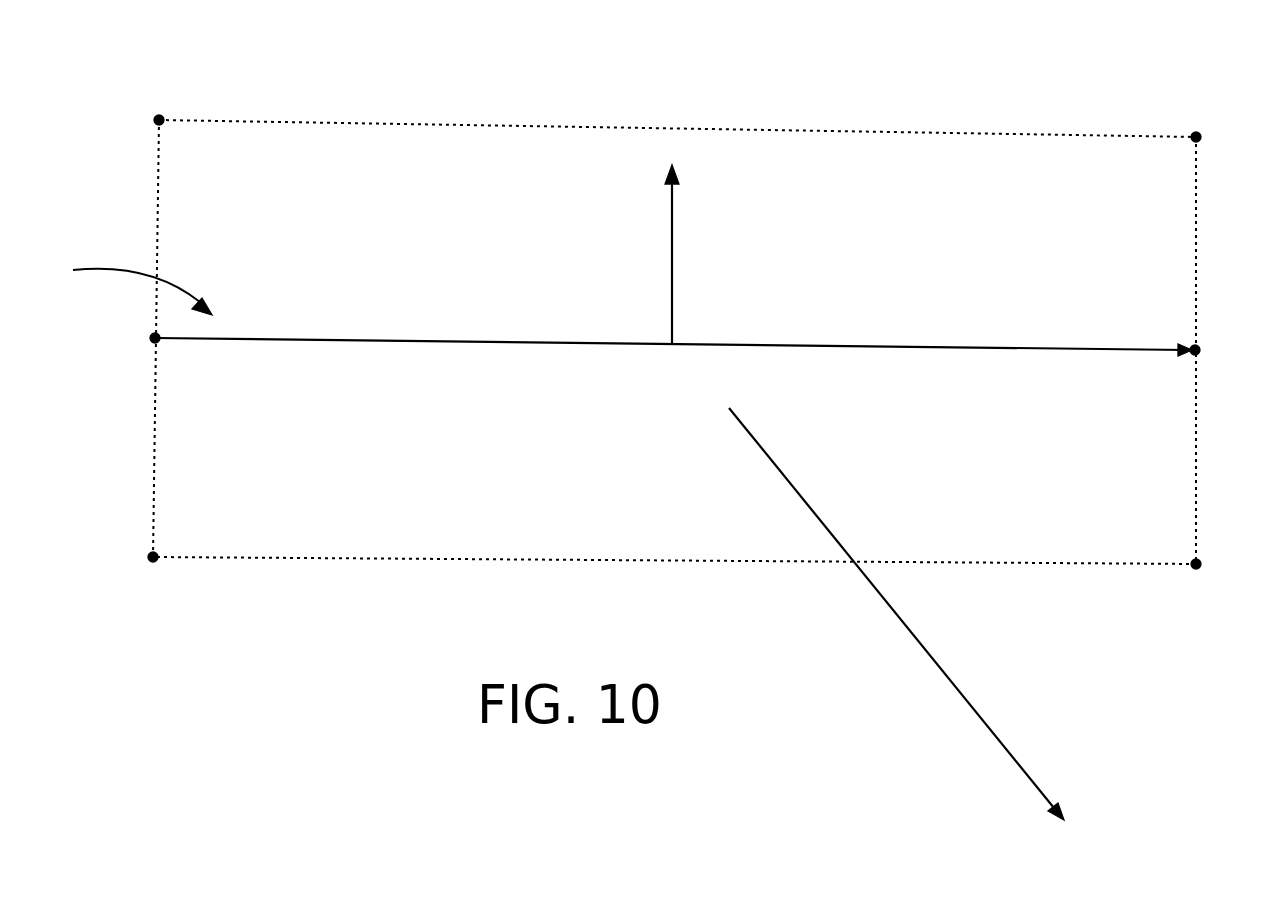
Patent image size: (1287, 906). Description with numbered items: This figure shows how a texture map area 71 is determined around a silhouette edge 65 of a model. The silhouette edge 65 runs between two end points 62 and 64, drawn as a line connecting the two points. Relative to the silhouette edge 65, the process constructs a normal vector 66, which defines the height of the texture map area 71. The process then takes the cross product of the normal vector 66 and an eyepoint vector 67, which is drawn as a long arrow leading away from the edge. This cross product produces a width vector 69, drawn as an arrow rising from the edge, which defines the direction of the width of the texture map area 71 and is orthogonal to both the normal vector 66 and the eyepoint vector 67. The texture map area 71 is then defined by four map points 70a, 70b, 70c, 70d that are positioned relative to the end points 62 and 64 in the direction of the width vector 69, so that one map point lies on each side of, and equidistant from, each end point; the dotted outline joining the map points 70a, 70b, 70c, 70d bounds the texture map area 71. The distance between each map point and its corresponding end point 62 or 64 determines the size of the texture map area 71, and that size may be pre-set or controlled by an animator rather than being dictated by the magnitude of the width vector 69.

The end point 62 is at (158, 342).
The end point 64 is at (1200, 352).
The silhouette edge 65 is at (117, 283).
The normal vector 66 is at (435, 342).
The eyepoint vector 67 is at (931, 658).
The width vector 69 is at (673, 240).
The map point 70a is at (159, 117).
The map point 70b is at (1194, 134).
The map point 70c is at (1194, 568).
The map point 70d is at (150, 561).
The texture map area 71 is at (787, 158).